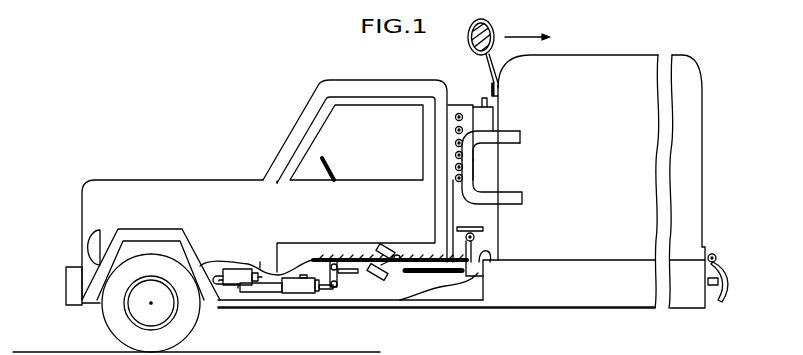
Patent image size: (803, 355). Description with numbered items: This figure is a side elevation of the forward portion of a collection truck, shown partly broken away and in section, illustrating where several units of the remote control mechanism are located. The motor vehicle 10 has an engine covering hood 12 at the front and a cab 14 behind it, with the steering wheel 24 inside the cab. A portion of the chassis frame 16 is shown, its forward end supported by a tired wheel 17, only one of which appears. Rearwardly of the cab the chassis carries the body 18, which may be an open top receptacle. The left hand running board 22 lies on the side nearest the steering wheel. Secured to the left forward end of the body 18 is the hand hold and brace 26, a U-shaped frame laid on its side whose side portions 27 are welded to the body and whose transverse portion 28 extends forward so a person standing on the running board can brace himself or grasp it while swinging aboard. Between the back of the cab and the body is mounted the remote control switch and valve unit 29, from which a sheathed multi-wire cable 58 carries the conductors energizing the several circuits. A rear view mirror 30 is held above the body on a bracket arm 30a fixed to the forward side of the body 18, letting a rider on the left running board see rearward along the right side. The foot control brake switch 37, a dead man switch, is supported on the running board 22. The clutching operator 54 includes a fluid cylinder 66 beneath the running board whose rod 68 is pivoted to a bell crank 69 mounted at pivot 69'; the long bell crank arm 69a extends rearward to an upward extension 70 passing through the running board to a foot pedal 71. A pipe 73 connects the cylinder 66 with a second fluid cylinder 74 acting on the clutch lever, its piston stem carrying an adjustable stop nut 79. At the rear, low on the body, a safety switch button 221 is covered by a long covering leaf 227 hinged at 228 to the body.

The motor vehicle 10 is at (97, 176).
The engine covering hood 12 is at (145, 195).
The cab 14 is at (310, 95).
The chassis frame 16 is at (573, 288).
The tired wheel 17 is at (118, 325).
The body 18 is at (622, 72).
The left hand running board 22 is at (490, 257).
The steering wheel 24 is at (333, 168).
The hand hold and brace 26 is at (490, 130).
The side portions 27 is at (524, 137).
The transverse portion 28 is at (463, 175).
The remote control switch and valve unit 29 is at (462, 106).
The rear view mirror 30 is at (495, 28).
The bracket arm 30a is at (502, 69).
The foot control brake switch 37 is at (390, 247).
The clutching operator 54 is at (238, 288).
The sheathed multi-wire cable 58 is at (448, 213).
The fluid cylinder 66 is at (302, 293).
The rod 68 is at (327, 295).
The bell crank 69 is at (356, 282).
The pivot mounting 69' is at (335, 250).
The bell crank arm 69a is at (350, 268).
The upward extension 70 is at (500, 245).
The foot pedal 71 is at (484, 228).
The pipe 73 is at (268, 292).
The fluid cylinder 74 is at (237, 271).
The adjustable stop nut 79 is at (260, 268).
The button 221 is at (712, 288).
The covering leaf 227 is at (729, 278).
The hinge 228 is at (715, 253).